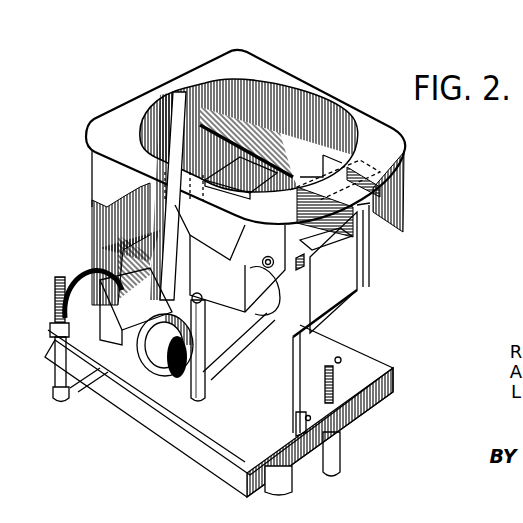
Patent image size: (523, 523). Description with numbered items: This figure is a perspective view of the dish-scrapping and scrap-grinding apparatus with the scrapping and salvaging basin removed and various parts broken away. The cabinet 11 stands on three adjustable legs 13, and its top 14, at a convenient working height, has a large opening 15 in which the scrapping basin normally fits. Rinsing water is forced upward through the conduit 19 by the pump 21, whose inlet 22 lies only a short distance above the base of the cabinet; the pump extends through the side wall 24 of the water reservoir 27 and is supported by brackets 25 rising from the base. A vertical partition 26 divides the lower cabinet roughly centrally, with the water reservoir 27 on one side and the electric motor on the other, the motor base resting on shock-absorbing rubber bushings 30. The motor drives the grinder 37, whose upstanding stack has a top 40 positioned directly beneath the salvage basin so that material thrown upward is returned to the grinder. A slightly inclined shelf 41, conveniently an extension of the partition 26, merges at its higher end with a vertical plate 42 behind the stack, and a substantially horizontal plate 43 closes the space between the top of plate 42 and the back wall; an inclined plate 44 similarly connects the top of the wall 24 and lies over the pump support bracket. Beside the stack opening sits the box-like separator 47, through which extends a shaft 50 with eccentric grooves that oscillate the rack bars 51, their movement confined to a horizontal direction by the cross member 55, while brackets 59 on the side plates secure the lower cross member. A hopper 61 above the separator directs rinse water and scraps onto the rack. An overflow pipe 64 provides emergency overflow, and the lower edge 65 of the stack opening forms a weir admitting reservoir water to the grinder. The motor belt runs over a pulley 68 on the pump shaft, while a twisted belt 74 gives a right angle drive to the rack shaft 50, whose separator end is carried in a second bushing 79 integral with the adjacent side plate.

The cabinet 11 is at (94, 193).
The adjustable legs 13 is at (41, 354).
The top of the cabinet 14 is at (90, 135).
The opening 15 is at (355, 150).
The conduit 19 is at (196, 173).
The pump 21 is at (120, 398).
The inlet of the pump 22 is at (180, 405).
The side wall of the water reservoir 24 is at (89, 388).
The brackets 25 is at (53, 398).
The vertical partition 26 is at (298, 423).
The water reservoir 27 is at (239, 431).
The rubber bushings 30 is at (365, 401).
The grinder 37 is at (204, 300).
The top of the stack 40 is at (241, 178).
The shelf 41 is at (337, 300).
The vertical plate 42 is at (254, 168).
The horizontal plate 43 is at (290, 162).
The inclined plate 44 is at (136, 287).
The separator 47 is at (301, 266).
The shaft 50 is at (279, 302).
The rack bars 51 is at (326, 237).
The cross member 55 is at (363, 267).
The brackets 59 is at (210, 226).
The hopper 61 is at (318, 166).
The overflow pipe 64 is at (205, 371).
The lower edge of the stack opening 65 is at (241, 245).
The pulley 68 is at (78, 279).
The belt 74 is at (320, 382).
The second bushing 79 is at (266, 257).